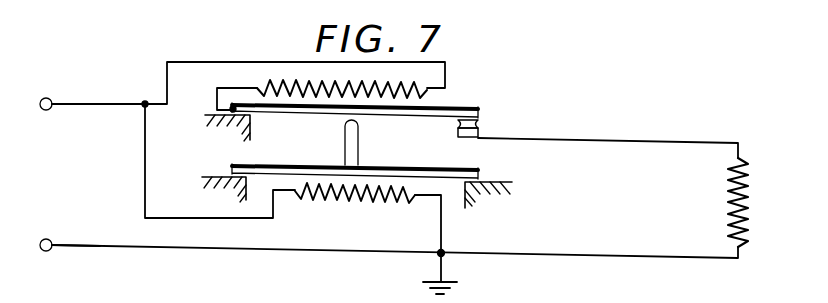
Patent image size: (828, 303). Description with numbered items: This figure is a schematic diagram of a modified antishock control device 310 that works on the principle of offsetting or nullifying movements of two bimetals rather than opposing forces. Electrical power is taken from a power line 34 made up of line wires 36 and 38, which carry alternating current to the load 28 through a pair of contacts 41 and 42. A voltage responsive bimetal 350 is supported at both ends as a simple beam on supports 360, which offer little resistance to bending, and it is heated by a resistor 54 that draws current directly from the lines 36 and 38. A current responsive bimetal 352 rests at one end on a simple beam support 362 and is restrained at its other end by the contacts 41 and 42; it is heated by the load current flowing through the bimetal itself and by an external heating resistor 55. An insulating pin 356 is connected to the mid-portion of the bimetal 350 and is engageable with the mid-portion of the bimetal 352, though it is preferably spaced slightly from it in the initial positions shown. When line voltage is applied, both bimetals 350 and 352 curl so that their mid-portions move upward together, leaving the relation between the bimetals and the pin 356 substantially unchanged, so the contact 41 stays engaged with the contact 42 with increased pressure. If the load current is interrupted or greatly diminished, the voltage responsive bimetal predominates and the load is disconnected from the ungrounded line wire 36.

The antishock control device 310 is at (124, 67).
The power line 34 is at (53, 142).
The line wire 36 is at (93, 104).
The line wire 38 is at (100, 221).
The load 28 is at (749, 206).
The contact 41 is at (478, 125).
The contact 42 is at (479, 133).
The resistor 54 is at (314, 196).
The external heating resistor 55 is at (297, 82).
The bimetal 350 is at (450, 166).
The bimetal 352 is at (452, 106).
The insulating pin 356 is at (350, 139).
The simple beam supports 360 is at (219, 178).
The simple beam support 362 is at (207, 117).